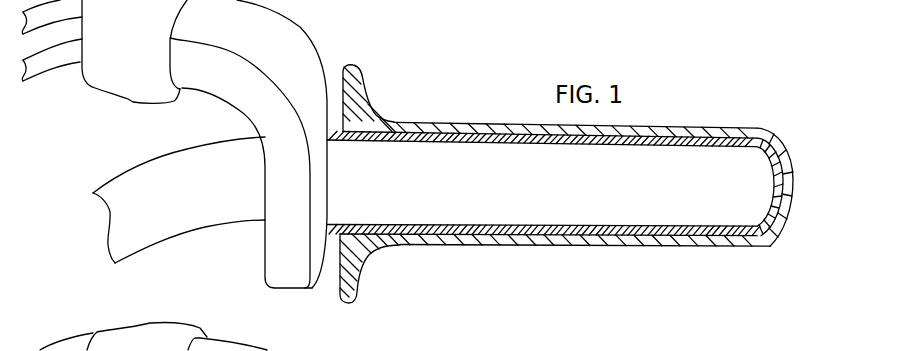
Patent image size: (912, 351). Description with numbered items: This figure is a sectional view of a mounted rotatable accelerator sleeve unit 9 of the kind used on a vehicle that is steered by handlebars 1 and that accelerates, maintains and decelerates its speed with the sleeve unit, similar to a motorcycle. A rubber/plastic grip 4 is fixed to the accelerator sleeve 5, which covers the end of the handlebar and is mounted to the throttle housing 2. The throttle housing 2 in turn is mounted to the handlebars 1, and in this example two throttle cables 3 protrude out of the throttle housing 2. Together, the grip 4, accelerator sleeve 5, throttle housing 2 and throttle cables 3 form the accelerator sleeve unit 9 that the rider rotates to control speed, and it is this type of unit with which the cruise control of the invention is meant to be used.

The handlebars 1 is at (220, 202).
The throttle housing 2 is at (287, 38).
The throttle cables 3 is at (37, 15).
The rubber/plastic grip 4 is at (372, 110).
The accelerator sleeve 5 is at (457, 140).
The rotatable accelerator sleeve unit 9 is at (548, 254).